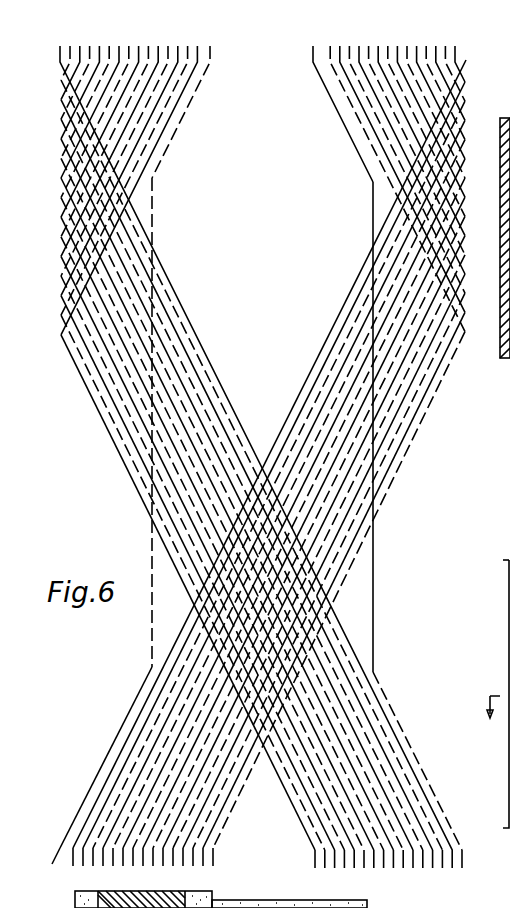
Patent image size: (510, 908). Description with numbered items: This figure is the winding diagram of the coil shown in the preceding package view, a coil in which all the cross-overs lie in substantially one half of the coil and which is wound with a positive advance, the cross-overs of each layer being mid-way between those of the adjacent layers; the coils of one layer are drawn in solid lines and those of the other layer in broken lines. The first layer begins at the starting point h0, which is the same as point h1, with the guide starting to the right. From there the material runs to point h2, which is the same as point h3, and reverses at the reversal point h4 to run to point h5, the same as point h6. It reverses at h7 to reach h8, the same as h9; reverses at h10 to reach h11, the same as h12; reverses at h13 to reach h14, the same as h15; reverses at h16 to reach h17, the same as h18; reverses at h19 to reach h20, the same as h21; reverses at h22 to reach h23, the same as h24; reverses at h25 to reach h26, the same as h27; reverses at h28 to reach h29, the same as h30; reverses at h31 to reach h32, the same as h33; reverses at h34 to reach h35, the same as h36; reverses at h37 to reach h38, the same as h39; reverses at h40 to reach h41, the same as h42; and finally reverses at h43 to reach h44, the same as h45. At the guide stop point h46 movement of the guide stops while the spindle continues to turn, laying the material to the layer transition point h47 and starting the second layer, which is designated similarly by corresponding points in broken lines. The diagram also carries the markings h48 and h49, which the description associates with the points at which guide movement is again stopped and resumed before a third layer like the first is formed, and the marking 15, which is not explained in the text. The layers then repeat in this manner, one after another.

The starting point h0 is at (60, 848).
The first layer point h1 is at (252, 443).
The first layer point h2 is at (481, 857).
The first layer point h3 is at (466, 60).
The reversal point h4 is at (465, 82).
The first layer point h5 is at (72, 453).
The first layer point h6 is at (48, 80).
The reversal point h7 is at (61, 100).
The first layer point h8 is at (447, 463).
The first layer point h9 is at (478, 101).
The reversal point h10 is at (465, 120).
The first layer point h11 is at (86, 463).
The first layer point h12 is at (48, 119).
The reversal point h13 is at (61, 139).
The first layer point h14 is at (438, 463).
The first layer point h15 is at (478, 140).
The reversal point h16 is at (465, 159).
The first layer point h17 is at (99, 462).
The first layer point h18 is at (48, 158).
The reversal point h19 is at (61, 178).
The first layer point h20 is at (426, 463).
The first layer point h21 is at (478, 178).
The reversal point h22 is at (465, 197).
The first layer point h23 is at (112, 460).
The first layer point h24 is at (48, 198).
The reversal point h25 is at (61, 217).
The first layer point h26 is at (412, 463).
The first layer point h27 is at (478, 216).
The reversal point h28 is at (465, 236).
The first layer point h29 is at (126, 460).
The first layer point h30 is at (48, 237).
The reversal point h31 is at (61, 256).
The first layer point h32 is at (401, 463).
The first layer point h33 is at (478, 255).
The reversal point h34 is at (465, 274).
The first layer point h35 is at (140, 460).
The first layer point h36 is at (48, 276).
The reversal point h37 is at (61, 296).
The first layer point h38 is at (386, 463).
The first layer point h39 is at (478, 293).
The reversal point h40 is at (465, 312).
The first layer point h41 is at (154, 459).
The first layer point h42 is at (48, 315).
The reversal point h43 is at (61, 335).
The first layer point h44 is at (293, 867).
The first layer point h45 is at (478, 332).
The guide stop point h46 is at (373, 182).
The layer transition point h47 is at (395, 670).
The conductor h48 (edge conductor) h48 is at (153, 182).
The conductor h49 is at (152, 667).
The direction of movement / layer 15 is at (493, 694).